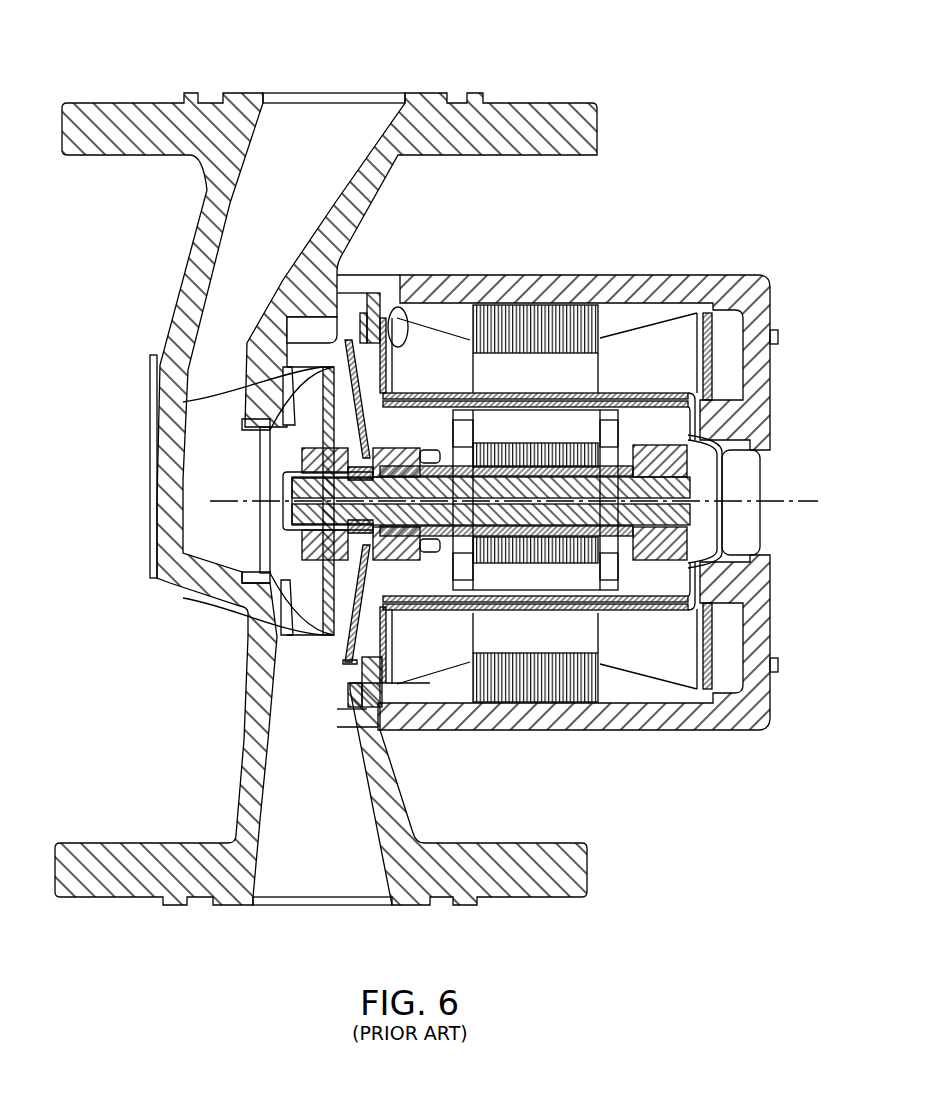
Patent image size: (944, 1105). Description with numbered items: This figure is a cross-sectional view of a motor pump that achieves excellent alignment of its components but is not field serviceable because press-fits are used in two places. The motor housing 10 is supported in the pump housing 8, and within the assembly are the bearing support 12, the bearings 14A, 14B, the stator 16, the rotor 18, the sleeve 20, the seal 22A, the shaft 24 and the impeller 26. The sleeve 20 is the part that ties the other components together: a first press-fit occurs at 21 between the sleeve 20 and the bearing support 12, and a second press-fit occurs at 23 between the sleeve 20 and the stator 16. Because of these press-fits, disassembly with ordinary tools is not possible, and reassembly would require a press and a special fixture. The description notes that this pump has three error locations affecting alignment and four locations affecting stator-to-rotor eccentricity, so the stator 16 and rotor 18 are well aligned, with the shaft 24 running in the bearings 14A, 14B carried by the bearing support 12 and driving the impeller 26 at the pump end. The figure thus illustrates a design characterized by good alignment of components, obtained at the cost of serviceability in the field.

The pump housing 8 is at (533, 103).
The motor housing 10 is at (653, 275).
The bearing support 12 is at (352, 352).
The bearing 14A is at (390, 460).
The bearing 14B is at (672, 540).
The stator 16 is at (516, 375).
The rotor 18 is at (571, 427).
The sleeve 20 is at (383, 375).
The press-fit 21 is at (345, 652).
The seal 22A is at (382, 683).
The press-fit 23 is at (577, 580).
The shaft 24 is at (690, 472).
The impeller 26 is at (305, 386).